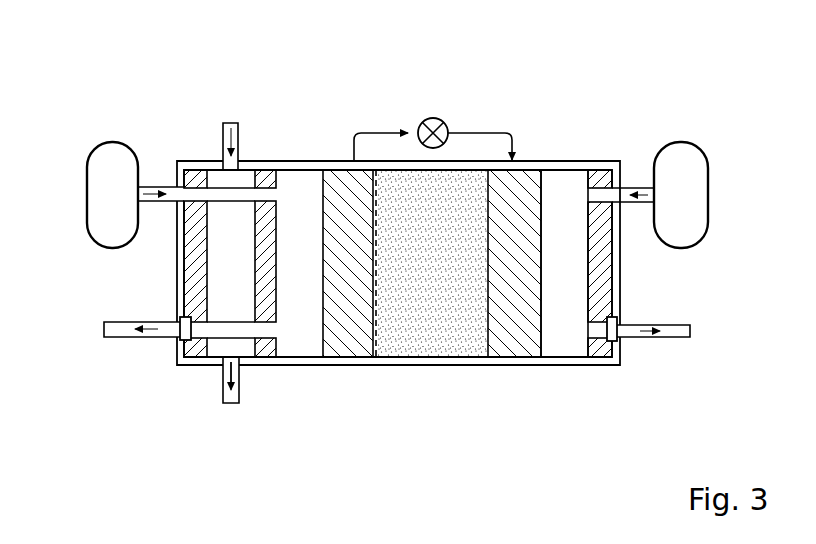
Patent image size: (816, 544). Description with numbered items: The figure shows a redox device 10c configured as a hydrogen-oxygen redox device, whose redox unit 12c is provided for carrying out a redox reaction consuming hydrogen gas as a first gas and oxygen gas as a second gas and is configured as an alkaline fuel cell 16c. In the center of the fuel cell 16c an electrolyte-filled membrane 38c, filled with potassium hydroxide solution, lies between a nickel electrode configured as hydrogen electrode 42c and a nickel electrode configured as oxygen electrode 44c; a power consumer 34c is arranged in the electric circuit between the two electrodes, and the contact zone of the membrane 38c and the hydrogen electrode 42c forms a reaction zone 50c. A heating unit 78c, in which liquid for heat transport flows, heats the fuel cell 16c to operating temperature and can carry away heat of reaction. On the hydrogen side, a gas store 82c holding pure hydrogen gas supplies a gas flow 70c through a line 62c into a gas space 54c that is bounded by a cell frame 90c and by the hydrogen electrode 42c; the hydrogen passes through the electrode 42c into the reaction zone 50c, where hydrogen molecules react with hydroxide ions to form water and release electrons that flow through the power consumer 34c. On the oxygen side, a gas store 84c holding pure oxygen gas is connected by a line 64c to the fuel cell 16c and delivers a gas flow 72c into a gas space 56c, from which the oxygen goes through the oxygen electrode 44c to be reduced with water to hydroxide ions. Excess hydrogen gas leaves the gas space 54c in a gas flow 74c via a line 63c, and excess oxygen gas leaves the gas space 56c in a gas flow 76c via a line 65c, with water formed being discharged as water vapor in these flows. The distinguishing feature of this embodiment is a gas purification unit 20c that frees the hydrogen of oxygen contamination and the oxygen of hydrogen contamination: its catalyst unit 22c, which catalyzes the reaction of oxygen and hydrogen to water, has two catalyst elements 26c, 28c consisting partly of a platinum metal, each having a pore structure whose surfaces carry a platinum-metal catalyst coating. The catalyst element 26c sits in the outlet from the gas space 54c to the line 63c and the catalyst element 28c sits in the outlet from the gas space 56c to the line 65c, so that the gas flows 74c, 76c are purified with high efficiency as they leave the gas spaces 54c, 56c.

The redox device 10c is at (96, 102).
The redox unit 12c is at (576, 372).
The alkaline fuel cell 16c is at (434, 320).
The gas purification unit 20c is at (163, 351).
The catalyst unit 22c is at (630, 346).
The catalyst element 26c is at (180, 318).
The catalyst element 28c is at (618, 321).
The power consumer 34c is at (446, 121).
The electrolyte-filled membrane 38c is at (425, 344).
The hydrogen electrode 42c is at (355, 349).
The oxygen electrode 44c is at (500, 346).
The reaction zone 50c is at (382, 182).
The gas space 54c is at (285, 178).
The gas space 56c is at (557, 180).
The line 62c is at (150, 185).
The line 63c is at (150, 338).
The line 64c is at (645, 187).
The line 65c is at (652, 338).
The gas flow 70c is at (160, 196).
The gas flow 72c is at (641, 204).
The gas flow 74c is at (147, 337).
The gas flow 76c is at (657, 325).
The heating unit 78c is at (215, 175).
The gas store 82c is at (115, 192).
The gas store 84c is at (697, 190).
The cell frame 90c is at (602, 167).